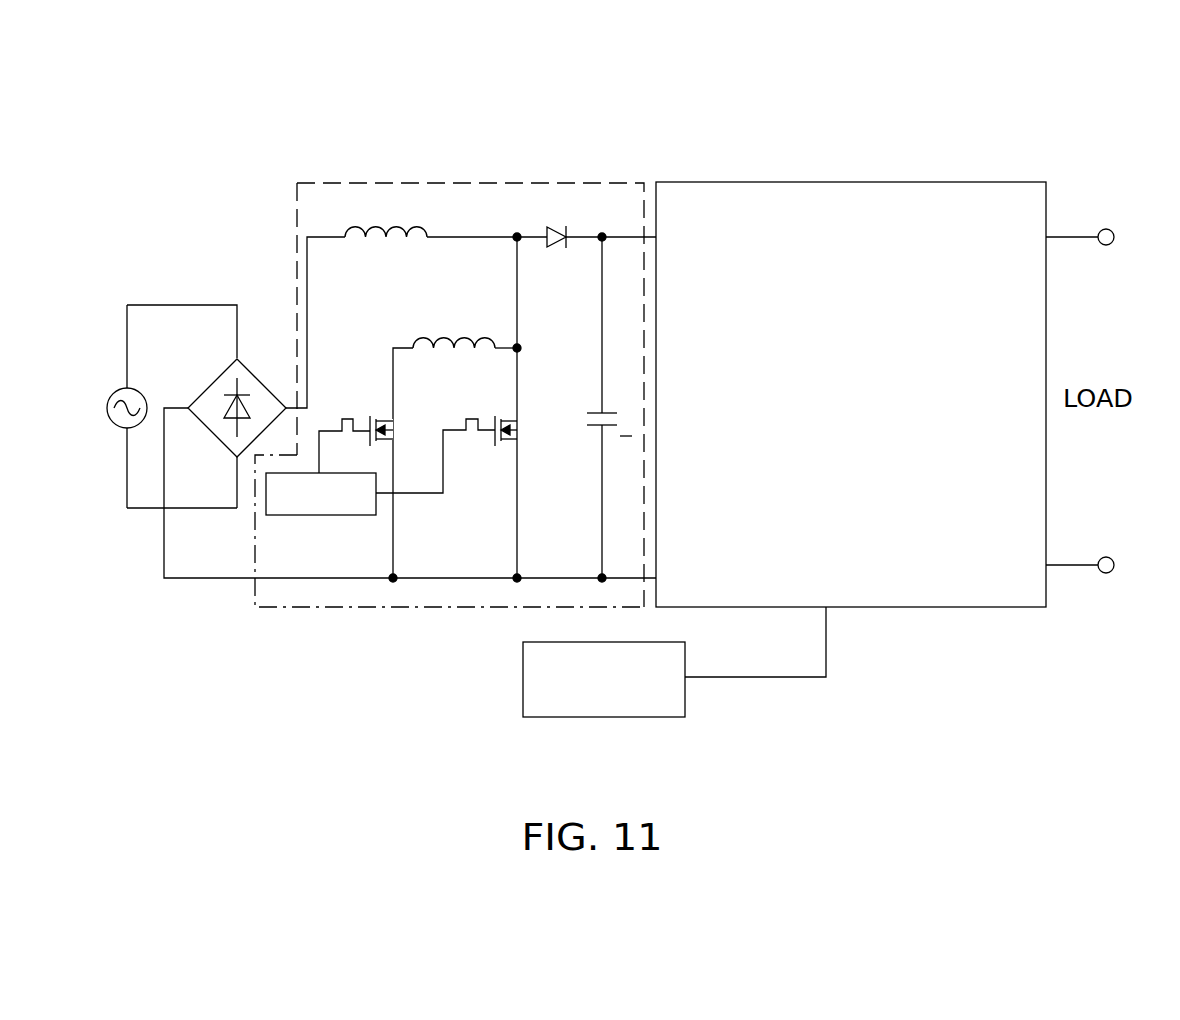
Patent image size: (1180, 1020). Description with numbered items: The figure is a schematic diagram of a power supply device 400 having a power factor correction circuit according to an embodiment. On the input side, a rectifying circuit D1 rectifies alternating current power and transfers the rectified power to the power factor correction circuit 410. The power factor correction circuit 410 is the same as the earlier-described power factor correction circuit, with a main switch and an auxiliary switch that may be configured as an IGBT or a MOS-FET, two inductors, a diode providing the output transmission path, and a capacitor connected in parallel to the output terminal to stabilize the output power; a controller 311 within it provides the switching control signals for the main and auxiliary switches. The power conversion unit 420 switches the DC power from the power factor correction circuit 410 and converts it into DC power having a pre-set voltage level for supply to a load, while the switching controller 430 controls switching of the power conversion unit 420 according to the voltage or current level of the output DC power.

The power supply device 400 is at (368, 67).
The power factor correction circuit 410 is at (468, 183).
The power conversion unit 420 is at (850, 182).
The switching controller 430 is at (603, 718).
The controller 311 is at (318, 516).
The rectifying circuit D1 is at (228, 407).